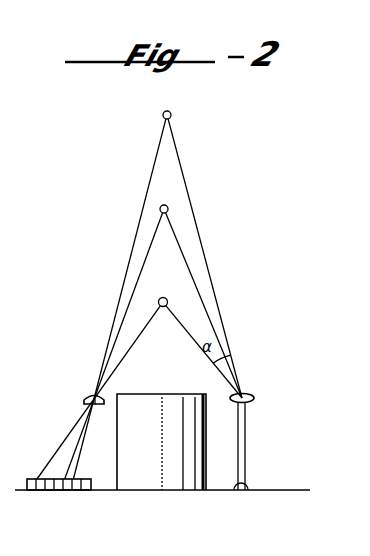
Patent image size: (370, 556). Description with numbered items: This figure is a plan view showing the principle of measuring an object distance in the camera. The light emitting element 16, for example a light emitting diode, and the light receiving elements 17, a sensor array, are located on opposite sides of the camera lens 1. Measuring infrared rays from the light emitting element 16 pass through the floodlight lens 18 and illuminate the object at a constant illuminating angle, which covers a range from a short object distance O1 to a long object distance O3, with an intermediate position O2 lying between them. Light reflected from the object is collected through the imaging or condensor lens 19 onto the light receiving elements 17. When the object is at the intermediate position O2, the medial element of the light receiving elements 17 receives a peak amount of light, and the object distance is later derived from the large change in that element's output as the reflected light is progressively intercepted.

The camera lens 1 is at (172, 484).
The light emitting element 16 is at (241, 491).
The light receiving elements 17 is at (58, 492).
The floodlight lens 18 is at (254, 397).
The imaging or condensor lens 19 is at (88, 396).
The short object distance O1 is at (168, 301).
The intermediate position O2 is at (167, 206).
The long object distance O3 is at (171, 115).